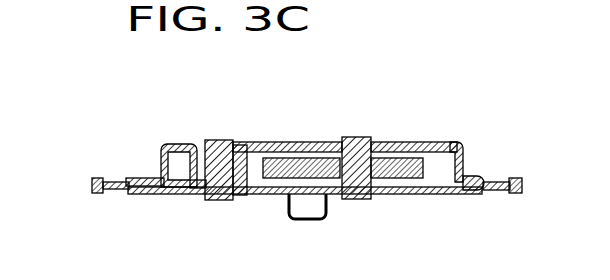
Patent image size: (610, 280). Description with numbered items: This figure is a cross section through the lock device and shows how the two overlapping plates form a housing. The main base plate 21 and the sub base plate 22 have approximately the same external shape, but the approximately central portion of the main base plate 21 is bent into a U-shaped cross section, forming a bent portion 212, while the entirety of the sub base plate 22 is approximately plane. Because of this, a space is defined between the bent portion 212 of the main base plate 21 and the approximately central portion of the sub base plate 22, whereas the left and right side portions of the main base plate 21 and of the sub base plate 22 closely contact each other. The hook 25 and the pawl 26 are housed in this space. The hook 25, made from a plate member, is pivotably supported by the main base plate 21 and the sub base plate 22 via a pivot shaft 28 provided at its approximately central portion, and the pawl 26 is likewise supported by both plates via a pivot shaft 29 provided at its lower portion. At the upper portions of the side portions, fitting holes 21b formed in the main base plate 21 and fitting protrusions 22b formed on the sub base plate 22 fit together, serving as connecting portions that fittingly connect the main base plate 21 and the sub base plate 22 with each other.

The main base plate 21 is at (470, 177).
The fitting holes 21b is at (129, 177).
The sub base plate 22 is at (428, 196).
The fitting protrusions 22b is at (101, 177).
The hook 25 is at (294, 157).
The pawl 26 is at (193, 142).
The pivot shaft 28 is at (359, 137).
The pivot shaft 29 is at (222, 139).
The bent portion 212 is at (425, 141).